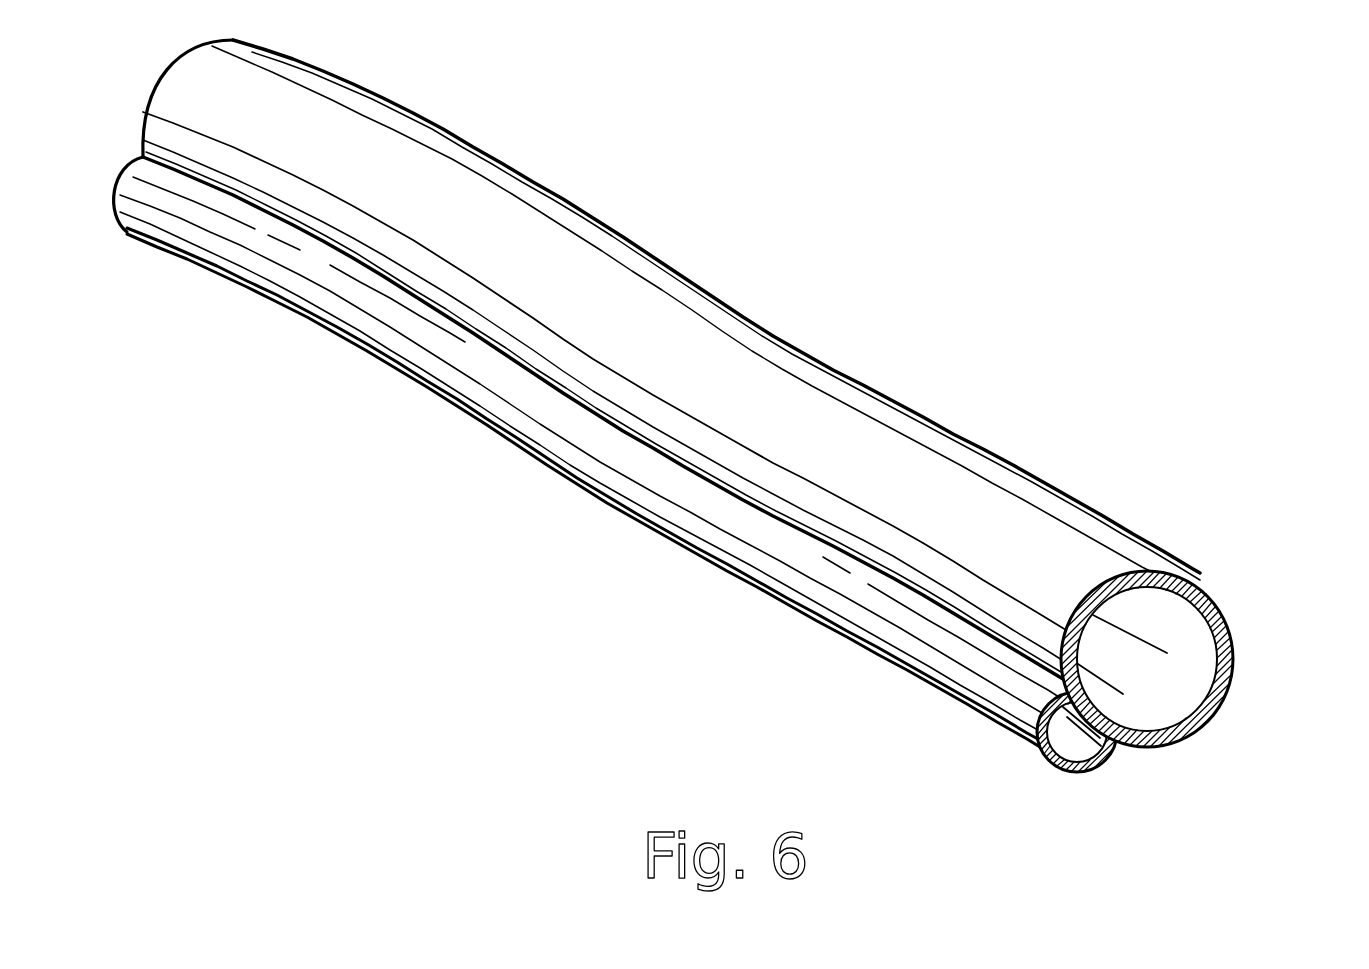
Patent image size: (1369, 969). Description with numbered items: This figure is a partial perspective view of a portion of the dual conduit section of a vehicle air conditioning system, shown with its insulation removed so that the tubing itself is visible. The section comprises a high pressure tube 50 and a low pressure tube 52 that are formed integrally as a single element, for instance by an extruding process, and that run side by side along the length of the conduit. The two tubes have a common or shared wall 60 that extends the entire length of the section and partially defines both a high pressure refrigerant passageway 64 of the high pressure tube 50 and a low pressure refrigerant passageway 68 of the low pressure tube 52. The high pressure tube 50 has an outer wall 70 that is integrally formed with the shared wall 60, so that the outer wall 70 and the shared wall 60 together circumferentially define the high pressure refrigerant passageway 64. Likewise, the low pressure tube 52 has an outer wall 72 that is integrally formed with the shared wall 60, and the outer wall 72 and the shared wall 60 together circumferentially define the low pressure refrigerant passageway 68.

The high pressure tube 50 is at (741, 468).
The low pressure tube 52 is at (1224, 598).
The shared wall 60 is at (1174, 716).
The high pressure refrigerant passageway 64 is at (1065, 717).
The low pressure refrigerant passageway 68 is at (1146, 619).
The outer wall 70 is at (615, 501).
The outer wall 72 is at (1215, 674).